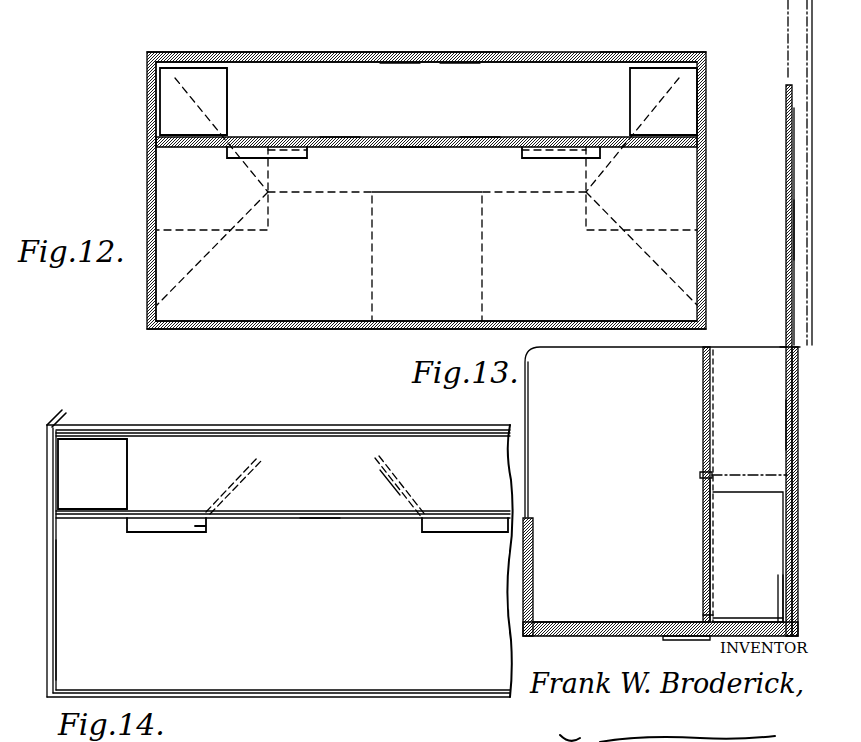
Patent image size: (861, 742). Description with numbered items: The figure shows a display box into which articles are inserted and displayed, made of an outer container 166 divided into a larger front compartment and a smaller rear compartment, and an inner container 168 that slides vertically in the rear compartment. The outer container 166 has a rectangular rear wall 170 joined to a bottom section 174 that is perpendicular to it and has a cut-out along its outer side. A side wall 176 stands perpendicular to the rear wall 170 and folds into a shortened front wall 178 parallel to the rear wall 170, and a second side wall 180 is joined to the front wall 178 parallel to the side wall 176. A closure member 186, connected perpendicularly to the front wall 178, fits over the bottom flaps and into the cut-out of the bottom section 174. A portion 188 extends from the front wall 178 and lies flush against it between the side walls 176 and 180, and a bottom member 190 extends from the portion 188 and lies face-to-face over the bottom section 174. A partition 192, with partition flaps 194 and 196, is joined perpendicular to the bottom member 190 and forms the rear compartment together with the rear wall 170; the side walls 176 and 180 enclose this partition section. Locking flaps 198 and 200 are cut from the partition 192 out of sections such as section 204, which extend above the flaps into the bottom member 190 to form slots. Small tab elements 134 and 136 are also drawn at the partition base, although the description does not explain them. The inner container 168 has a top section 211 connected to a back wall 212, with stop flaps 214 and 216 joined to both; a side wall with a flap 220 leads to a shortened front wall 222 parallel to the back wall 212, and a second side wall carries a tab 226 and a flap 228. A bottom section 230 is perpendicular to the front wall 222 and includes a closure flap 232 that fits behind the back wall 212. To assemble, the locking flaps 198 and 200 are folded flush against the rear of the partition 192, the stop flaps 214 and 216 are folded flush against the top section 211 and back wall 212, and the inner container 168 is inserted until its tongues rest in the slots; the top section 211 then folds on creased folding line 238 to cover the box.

In FIG. 12, the tab 134 is at (566, 158).
In FIG. 14, the tab 134 is at (442, 532).
In FIG. 12, the tab 136 is at (277, 158).
In FIG. 13, the tab 136 is at (706, 622).
In FIG. 14, the tab 136 is at (198, 532).
In FIG. 13, the outer container 166 is at (536, 368).
In FIG. 14, the outer container 166 is at (207, 424).
In FIG. 13, the inner container 168 is at (725, 505).
In FIG. 14, the inner container 168 is at (388, 492).
In FIG. 12, the rear wall 170 is at (424, 53).
In FIG. 13, the rear wall 170 is at (792, 400).
In FIG. 14, the rear wall 170 is at (304, 425).
In FIG. 13, the bottom section 174 is at (708, 636).
In FIG. 12, the side wall 176 is at (147, 171).
In FIG. 13, the side wall 176 is at (581, 439).
In FIG. 14, the side wall 176 is at (47, 560).
In FIG. 12, the front wall 178 is at (440, 329).
In FIG. 14, the front wall 178 is at (288, 698).
In FIG. 12, the second side wall 180 is at (706, 172).
In FIG. 13, the closure member 186 is at (578, 630).
In FIG. 12, the portion 188 is at (320, 321).
In FIG. 13, the portion 188 is at (534, 560).
In FIG. 14, the portion 188 is at (258, 690).
In FIG. 12, the bottom member 190 is at (440, 232).
In FIG. 13, the bottom member 190 is at (622, 630).
In FIG. 14, the bottom member 190 is at (370, 608).
In FIG. 12, the partition 192 is at (404, 148).
In FIG. 13, the partition 192 is at (703, 420).
In FIG. 14, the partition 192 is at (310, 520).
In FIG. 12, the partition flap 194 is at (157, 194).
In FIG. 14, the partition flap 194 is at (56, 596).
In FIG. 12, the partition flap 196 is at (697, 194).
In FIG. 12, the locking flap 198 is at (338, 137).
In FIG. 14, the locking flap 198 is at (228, 472).
In FIG. 12, the locking flap 200 is at (493, 130).
In FIG. 13, the locking flap 200 is at (715, 479).
In FIG. 14, the locking flap 200 is at (396, 468).
In FIG. 13, the section 204 is at (700, 481).
In FIG. 12, the top section 211 is at (425, 70).
In FIG. 13, the top section 211 is at (787, 209).
In FIG. 14, the top section 211 is at (363, 430).
In FIG. 13, the back wall 212 is at (786, 427).
In FIG. 12, the stop flap 214 is at (666, 55).
In FIG. 12, the stop flap 216 is at (198, 40).
In FIG. 13, the stop flap 216 is at (796, 230).
In FIG. 14, the stop flap 216 is at (72, 412).
In FIG. 12, the flap 220 is at (634, 100).
In FIG. 12, the front wall 222 is at (432, 137).
In FIG. 13, the front wall 222 is at (715, 520).
In FIG. 14, the front wall 222 is at (298, 512).
In FIG. 12, the tab 226 is at (160, 84).
In FIG. 14, the tab 226 is at (54, 454).
In FIG. 12, the flap 228 is at (222, 97).
In FIG. 14, the flap 228 is at (122, 470).
In FIG. 12, the bottom section 230 is at (521, 76).
In FIG. 13, the bottom section 230 is at (770, 622).
In FIG. 14, the bottom section 230 is at (440, 442).
In FIG. 12, the closure flap 232 is at (356, 66).
In FIG. 13, the closure flap 232 is at (778, 590).
In FIG. 13, the creased folding line 238 is at (786, 347).